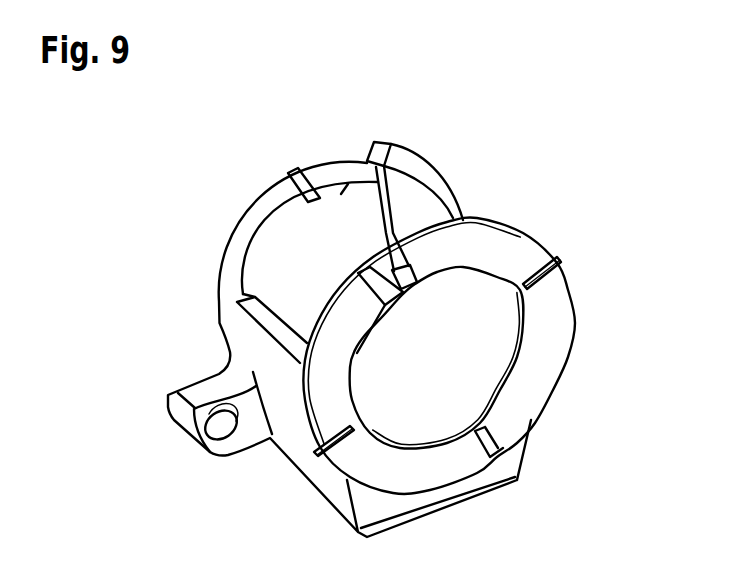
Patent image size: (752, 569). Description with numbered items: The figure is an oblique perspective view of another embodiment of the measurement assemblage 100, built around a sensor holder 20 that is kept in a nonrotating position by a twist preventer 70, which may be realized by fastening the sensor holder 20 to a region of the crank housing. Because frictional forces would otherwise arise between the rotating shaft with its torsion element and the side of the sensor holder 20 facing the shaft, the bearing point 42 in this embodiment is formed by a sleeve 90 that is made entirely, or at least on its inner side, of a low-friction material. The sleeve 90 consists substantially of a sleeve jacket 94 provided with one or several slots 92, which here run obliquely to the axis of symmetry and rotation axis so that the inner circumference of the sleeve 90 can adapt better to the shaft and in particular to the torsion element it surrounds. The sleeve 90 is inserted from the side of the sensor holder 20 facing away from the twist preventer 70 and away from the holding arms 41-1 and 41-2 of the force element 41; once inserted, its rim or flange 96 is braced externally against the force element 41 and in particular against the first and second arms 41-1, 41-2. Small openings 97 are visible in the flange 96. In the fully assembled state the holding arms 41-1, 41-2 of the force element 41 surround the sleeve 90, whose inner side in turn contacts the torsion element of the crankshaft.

The measurement assemblage 100 is at (408, 305).
The sensor holder 20 is at (400, 307).
The twist preventer 70 is at (224, 431).
The rim or flange 96 is at (483, 331).
The slots 97 is at (566, 257).
The bearing point 42 is at (506, 358).
The sleeve 90 is at (470, 350).
The slots 92 is at (453, 193).
The sleeve jacket 94 is at (341, 194).
The force element 41 is at (292, 183).
The first holding arm 41-1 is at (287, 188).
The second holding arm 41-2 is at (395, 150).